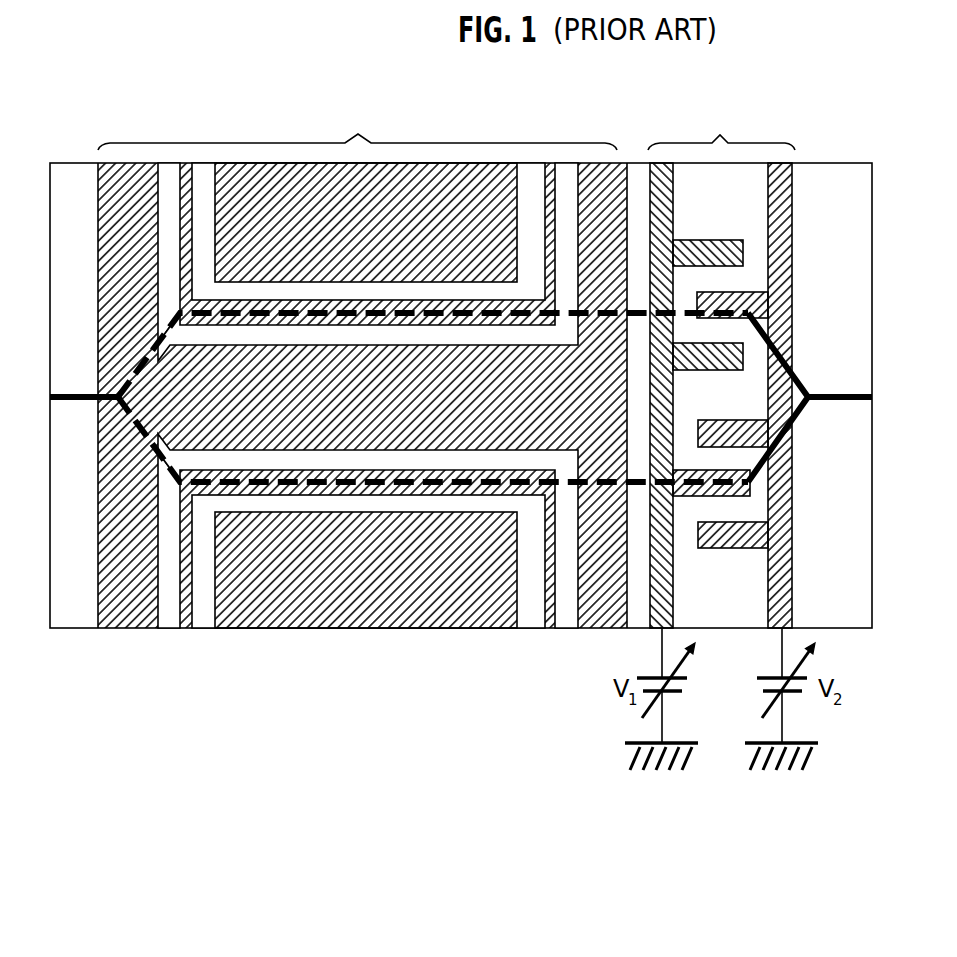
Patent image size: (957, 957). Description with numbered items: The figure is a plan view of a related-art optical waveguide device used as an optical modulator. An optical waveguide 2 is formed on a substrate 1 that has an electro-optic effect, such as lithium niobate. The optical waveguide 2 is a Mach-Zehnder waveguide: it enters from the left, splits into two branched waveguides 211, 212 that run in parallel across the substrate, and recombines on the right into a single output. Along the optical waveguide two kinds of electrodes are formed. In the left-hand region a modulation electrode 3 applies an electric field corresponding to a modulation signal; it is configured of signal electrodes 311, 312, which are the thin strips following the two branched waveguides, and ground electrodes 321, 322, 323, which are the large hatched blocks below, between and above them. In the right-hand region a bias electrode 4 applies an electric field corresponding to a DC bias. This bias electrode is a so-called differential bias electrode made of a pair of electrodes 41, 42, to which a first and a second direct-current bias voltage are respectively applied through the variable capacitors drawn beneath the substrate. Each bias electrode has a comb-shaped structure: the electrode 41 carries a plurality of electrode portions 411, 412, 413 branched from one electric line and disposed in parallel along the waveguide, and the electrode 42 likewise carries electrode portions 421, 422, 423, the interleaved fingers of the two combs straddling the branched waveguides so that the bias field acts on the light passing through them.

The substrate 1 is at (72, 605).
The optical waveguide 2 is at (858, 405).
The modulation electrode 3 is at (357, 125).
The bias electrode 4 is at (721, 126).
The electrode 41 is at (791, 486).
The electrode 42 is at (812, 395).
The branched waveguide 211 is at (572, 605).
The branched waveguide 212 is at (642, 300).
The signal electrode 311 is at (190, 600).
The signal electrode 312 is at (185, 163).
The ground electrode 321 is at (272, 605).
The ground electrode 322 is at (385, 430).
The ground electrode 323 is at (423, 183).
The electrode portion 411 is at (750, 495).
The electrode portion 412 is at (743, 353).
The electrode portion 413 is at (700, 240).
The electrode portion 421 is at (730, 548).
The electrode portion 422 is at (732, 403).
The electrode portion 423 is at (730, 292).